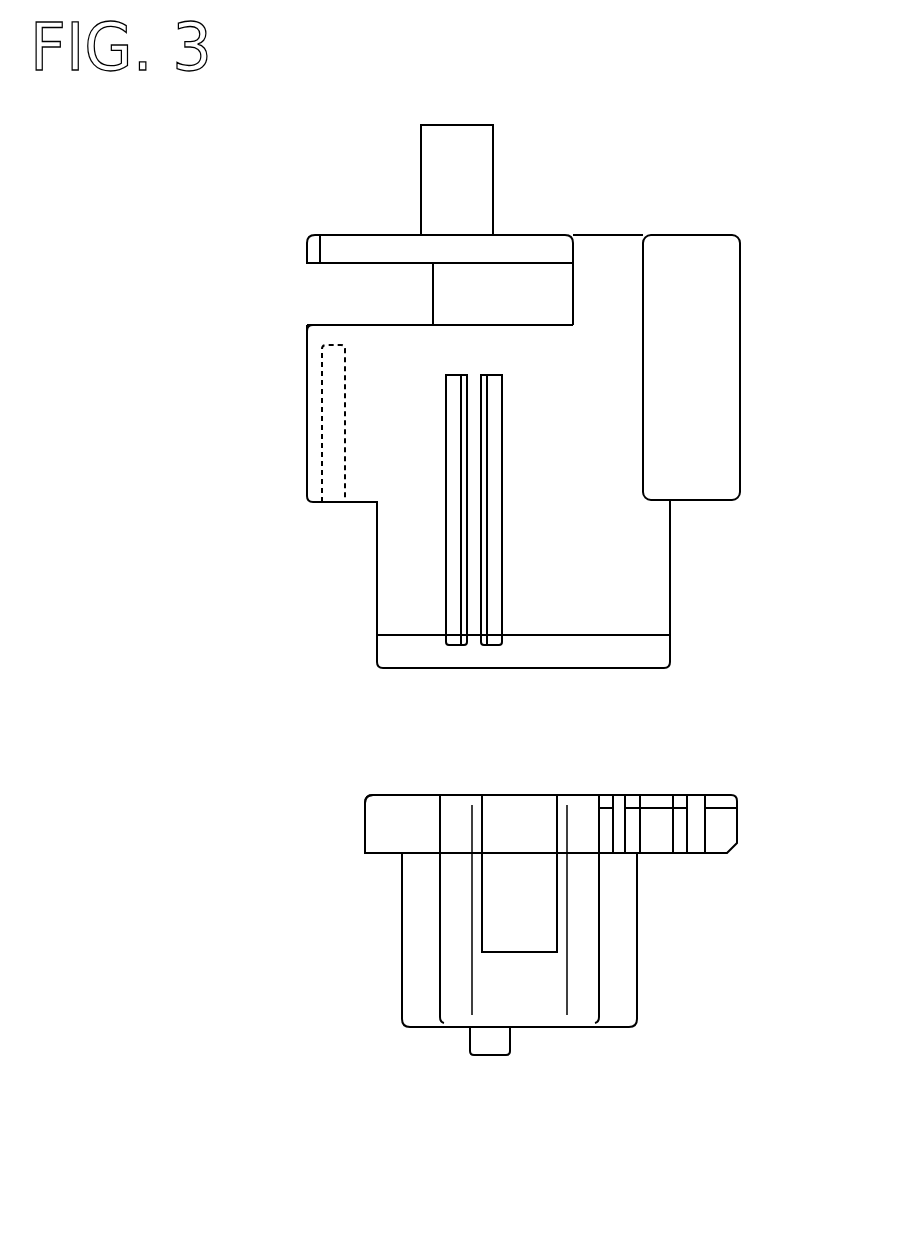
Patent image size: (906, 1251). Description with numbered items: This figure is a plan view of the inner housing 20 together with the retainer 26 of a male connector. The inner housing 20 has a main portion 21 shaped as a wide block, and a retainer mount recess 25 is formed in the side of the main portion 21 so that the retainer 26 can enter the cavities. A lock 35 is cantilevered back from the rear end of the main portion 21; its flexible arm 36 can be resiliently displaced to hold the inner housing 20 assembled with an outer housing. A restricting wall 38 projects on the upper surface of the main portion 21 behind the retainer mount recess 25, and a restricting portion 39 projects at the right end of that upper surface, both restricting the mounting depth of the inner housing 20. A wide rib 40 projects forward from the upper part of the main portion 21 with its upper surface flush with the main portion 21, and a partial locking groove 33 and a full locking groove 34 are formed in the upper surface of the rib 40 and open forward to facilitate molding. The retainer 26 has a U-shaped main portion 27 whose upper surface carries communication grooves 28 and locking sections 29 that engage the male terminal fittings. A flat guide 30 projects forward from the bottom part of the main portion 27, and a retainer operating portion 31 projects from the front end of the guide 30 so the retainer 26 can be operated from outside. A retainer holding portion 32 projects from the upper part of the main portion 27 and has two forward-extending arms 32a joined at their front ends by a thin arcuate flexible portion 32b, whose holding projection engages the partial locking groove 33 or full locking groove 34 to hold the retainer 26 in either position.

The inner housing 20 is at (670, 545).
The main portion 21 is at (306, 450).
The retainer mount recess 25 is at (365, 325).
The retainer 26 is at (737, 830).
The main portion 27 is at (365, 827).
The communication groove 28 is at (696, 815).
The locking section 29 is at (678, 818).
The guide 30 is at (407, 917).
The retainer operating portion 31 is at (488, 1046).
The retainer holding portion 32 is at (438, 972).
The arm 32a is at (455, 825).
The flexible portion 32b is at (530, 1010).
The partial locking groove 33 is at (458, 550).
The full locking groove 34 is at (491, 560).
The lock 35 is at (485, 143).
The flexible arm 36 is at (453, 180).
The restricting wall 38 is at (390, 248).
The restricting portion 39 is at (684, 258).
The rib 40 is at (630, 592).